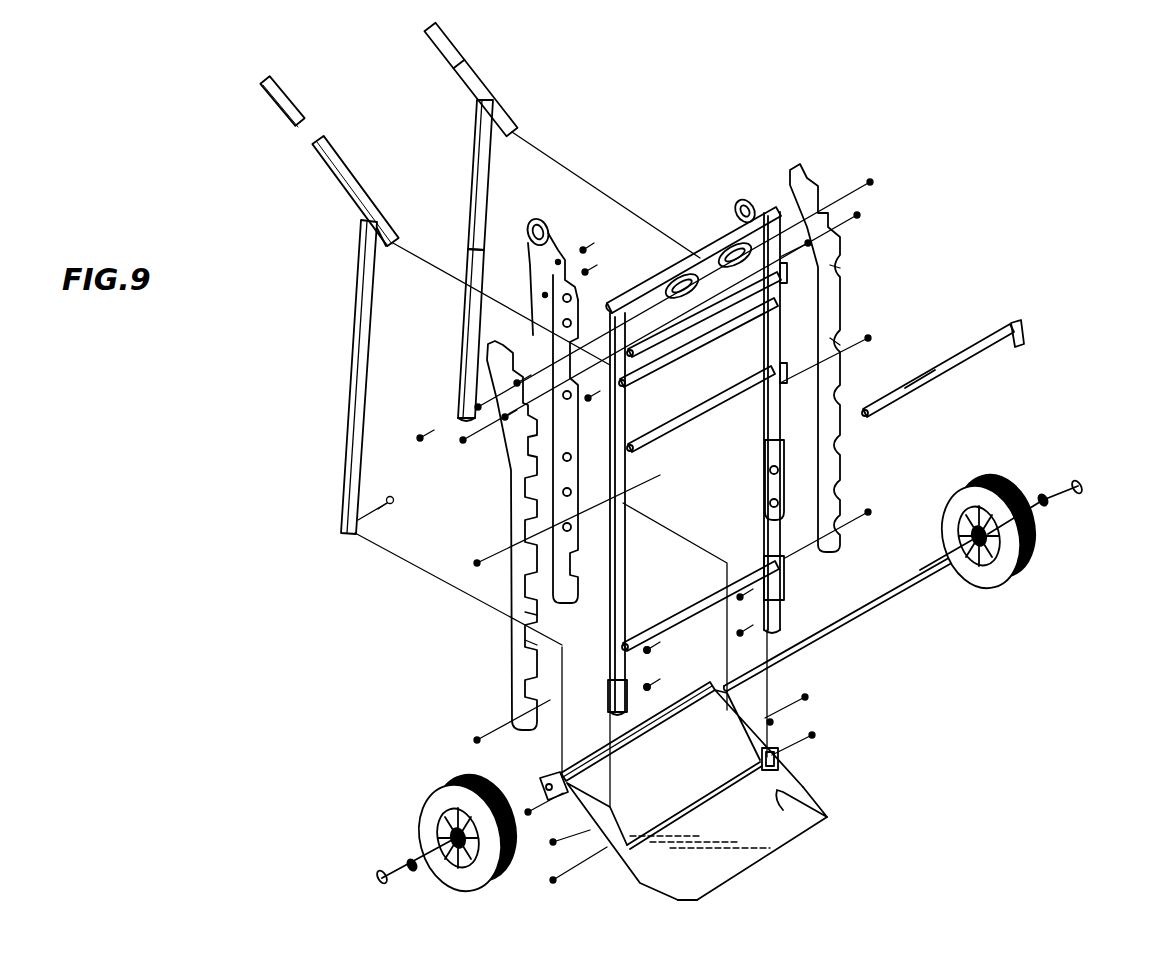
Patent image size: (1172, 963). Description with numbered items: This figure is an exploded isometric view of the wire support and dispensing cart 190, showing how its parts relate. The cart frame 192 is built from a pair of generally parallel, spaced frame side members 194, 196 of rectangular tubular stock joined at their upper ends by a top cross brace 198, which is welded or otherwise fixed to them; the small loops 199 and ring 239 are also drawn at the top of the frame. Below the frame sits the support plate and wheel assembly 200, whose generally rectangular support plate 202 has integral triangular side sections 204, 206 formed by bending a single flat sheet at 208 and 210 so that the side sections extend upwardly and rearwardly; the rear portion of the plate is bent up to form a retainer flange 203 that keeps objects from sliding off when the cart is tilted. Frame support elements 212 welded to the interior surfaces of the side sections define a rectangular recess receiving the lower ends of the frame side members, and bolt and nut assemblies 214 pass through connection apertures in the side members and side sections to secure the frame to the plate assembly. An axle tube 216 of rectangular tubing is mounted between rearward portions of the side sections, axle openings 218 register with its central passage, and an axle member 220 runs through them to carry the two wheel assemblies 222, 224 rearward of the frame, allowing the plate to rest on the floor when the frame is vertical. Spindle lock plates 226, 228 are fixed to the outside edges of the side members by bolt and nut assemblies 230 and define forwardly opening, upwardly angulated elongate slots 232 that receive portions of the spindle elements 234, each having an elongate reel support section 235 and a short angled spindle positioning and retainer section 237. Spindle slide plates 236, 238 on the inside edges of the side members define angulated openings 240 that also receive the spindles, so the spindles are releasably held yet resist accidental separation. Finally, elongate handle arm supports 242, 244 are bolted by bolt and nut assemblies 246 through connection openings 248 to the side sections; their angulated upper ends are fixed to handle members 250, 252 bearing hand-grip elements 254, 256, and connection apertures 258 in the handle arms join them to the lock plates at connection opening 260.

The wire support and dispensing cart 190 is at (962, 196).
The cart frame 192 is at (768, 205).
The frame side member 194 is at (612, 626).
The frame side member 196 is at (775, 612).
The top cross brace 198 is at (718, 250).
The retaining loop 199 is at (667, 277).
The support plate and wheel assembly 200 is at (727, 799).
The support plate 202 is at (770, 826).
The retainer flange 203 is at (652, 838).
The side section 204 is at (593, 830).
The side section 206 is at (790, 750).
The bend 208 is at (640, 878).
The bend 210 is at (790, 795).
The frame support element 212 is at (760, 760).
The bolt and nut assembly 214 is at (678, 710).
The axle tube 216 is at (676, 712).
The axle opening 218 is at (542, 782).
The axle member 220 is at (845, 606).
The wheel assembly 222 is at (427, 818).
The wheel assembly 224 is at (1035, 565).
The spindle lock plate 226 is at (523, 437).
The spindle lock plate 228 is at (812, 200).
The bolt and nut assembly 230 is at (760, 305).
The angulated elongate slot 232 is at (527, 643).
The spindle element 234 is at (700, 412).
The reel support section 235 is at (958, 362).
The spindle slide plate 236 is at (543, 267).
The spindle positioning and retainer section 237 is at (1024, 335).
The spindle slide plate 238 is at (767, 462).
The ring 239 is at (740, 198).
The angulated opening 240 is at (562, 322).
The handle arm support 242 is at (340, 477).
The handle arm support 244 is at (468, 345).
The bolt and nut assembly 246 is at (388, 507).
The connection opening 248 is at (557, 777).
The handle member 250 is at (352, 185).
The handle member 252 is at (478, 96).
The hand-grip element 254 is at (263, 80).
The hand-grip element 256 is at (447, 52).
The connection aperture 258 is at (367, 247).
The connection opening 260 is at (503, 420).